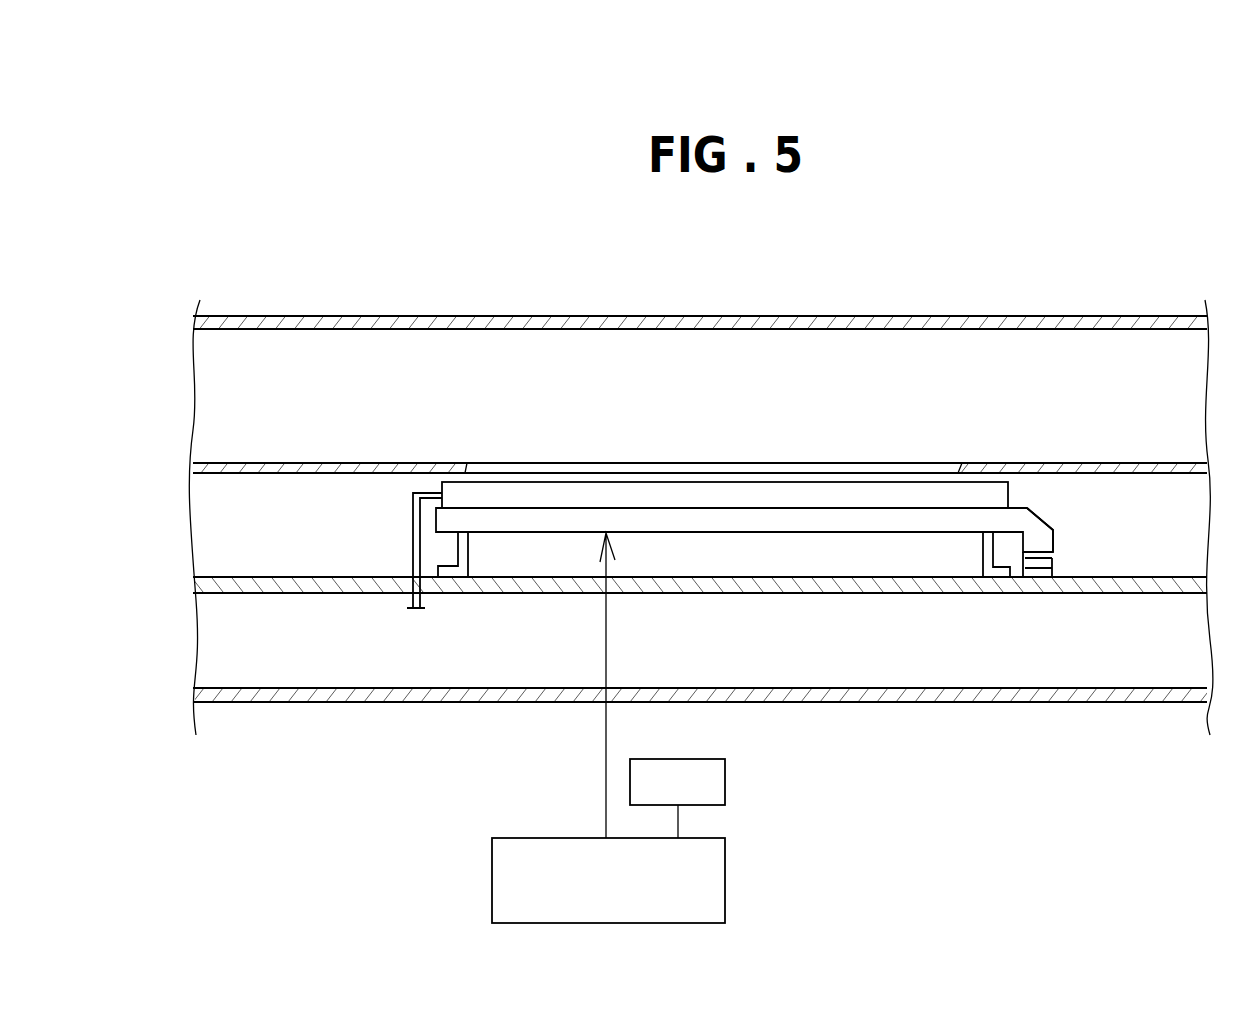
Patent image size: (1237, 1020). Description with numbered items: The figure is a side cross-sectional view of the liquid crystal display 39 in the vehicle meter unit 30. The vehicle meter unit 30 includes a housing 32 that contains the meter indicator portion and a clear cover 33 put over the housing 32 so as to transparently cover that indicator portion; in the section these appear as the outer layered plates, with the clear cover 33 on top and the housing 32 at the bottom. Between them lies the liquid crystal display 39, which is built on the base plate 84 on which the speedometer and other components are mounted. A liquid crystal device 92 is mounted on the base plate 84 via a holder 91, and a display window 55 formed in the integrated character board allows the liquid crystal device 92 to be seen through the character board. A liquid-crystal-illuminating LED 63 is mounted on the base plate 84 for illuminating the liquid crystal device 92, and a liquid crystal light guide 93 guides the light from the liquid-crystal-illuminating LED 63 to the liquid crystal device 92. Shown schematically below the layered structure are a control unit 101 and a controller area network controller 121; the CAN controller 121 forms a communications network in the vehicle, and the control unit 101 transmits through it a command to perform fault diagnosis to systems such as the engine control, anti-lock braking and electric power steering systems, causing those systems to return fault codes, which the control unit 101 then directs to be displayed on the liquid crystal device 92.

The vehicle meter unit 30 is at (347, 92).
The liquid crystal display 39 is at (363, 217).
The clear cover 33 is at (1018, 316).
The housing 32 is at (1155, 702).
The liquid crystal device 92 is at (698, 482).
The display window 55 is at (962, 464).
The liquid crystal light guide 93 is at (1035, 525).
The holder 91 is at (462, 548).
The liquid-crystal-illuminating LED 63 is at (1038, 572).
The base plate 84 is at (1112, 577).
The controller area network (CAN) controller 121 is at (725, 783).
The control unit 101 is at (725, 878).